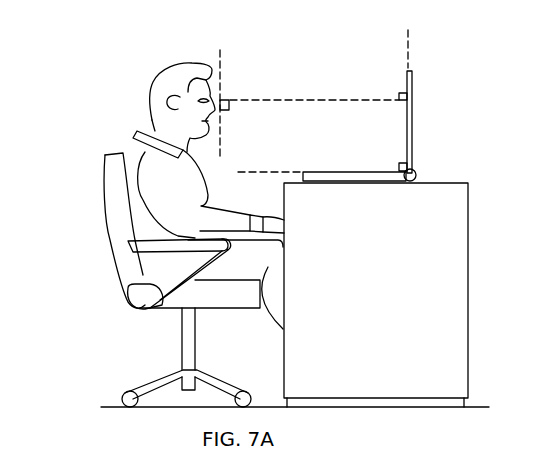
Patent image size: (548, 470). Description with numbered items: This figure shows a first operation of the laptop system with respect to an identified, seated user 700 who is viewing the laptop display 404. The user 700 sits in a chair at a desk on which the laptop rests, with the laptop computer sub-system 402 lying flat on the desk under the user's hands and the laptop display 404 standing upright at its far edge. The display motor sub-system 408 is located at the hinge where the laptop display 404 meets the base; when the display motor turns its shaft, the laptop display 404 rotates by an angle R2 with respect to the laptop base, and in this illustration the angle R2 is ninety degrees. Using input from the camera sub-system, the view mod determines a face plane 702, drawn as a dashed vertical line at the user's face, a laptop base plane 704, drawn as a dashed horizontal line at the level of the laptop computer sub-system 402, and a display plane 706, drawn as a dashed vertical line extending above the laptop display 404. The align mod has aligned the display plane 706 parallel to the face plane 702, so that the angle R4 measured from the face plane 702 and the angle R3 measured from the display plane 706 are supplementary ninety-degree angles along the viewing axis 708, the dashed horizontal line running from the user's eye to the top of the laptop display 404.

The user 700 is at (124, 118).
The face plane 702 is at (221, 50).
The laptop base plane 704 is at (270, 173).
The display plane 706 is at (409, 51).
The viewing axis 708 is at (306, 99).
The angle R2 is at (399, 162).
The angle R3 is at (399, 92).
The angle R4 is at (227, 111).
The laptop computer sub-system 402 is at (354, 181).
The laptop display 404 is at (413, 120).
The display motor sub-system 408 is at (417, 173).